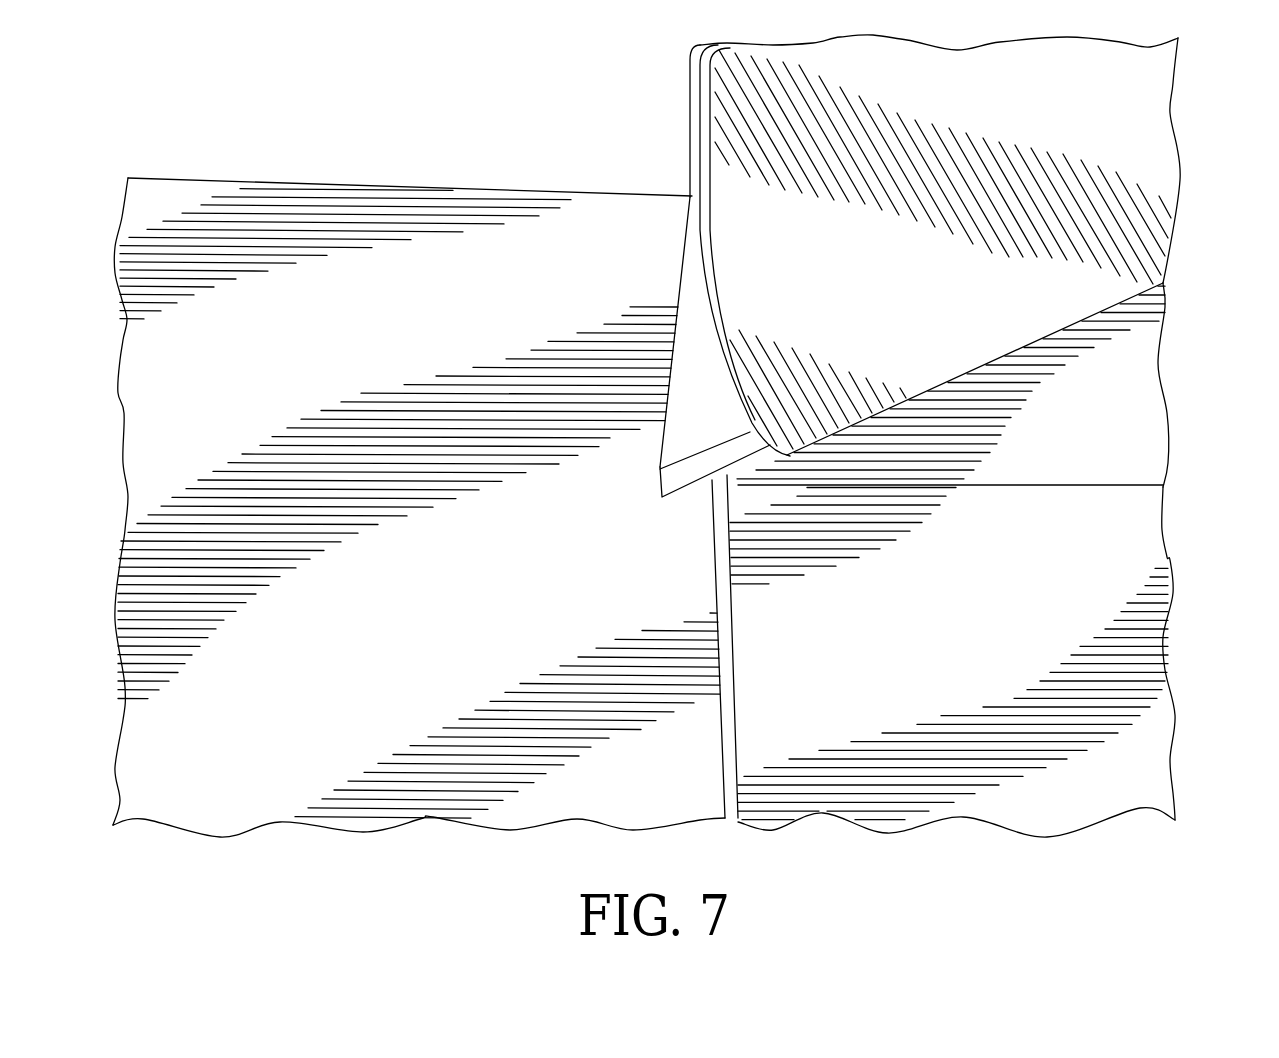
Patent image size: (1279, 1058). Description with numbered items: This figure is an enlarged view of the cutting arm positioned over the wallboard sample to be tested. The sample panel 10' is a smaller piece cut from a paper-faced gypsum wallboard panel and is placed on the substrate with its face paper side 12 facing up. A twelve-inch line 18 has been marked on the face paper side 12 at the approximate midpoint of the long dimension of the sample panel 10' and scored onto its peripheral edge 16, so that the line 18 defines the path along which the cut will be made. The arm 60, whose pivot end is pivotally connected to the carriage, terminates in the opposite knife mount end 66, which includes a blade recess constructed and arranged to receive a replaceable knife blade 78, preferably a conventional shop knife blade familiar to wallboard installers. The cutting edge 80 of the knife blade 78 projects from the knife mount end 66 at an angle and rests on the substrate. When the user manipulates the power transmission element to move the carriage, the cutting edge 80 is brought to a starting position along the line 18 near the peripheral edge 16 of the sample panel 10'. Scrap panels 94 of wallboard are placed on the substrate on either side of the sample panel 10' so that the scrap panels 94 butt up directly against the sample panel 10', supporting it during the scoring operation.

The arm 60 is at (1147, 84).
The knife mount end 66 is at (837, 307).
The knife blade 78 is at (693, 331).
The cutting edge 80 is at (683, 476).
The line 18 is at (1017, 485).
The face paper side 12 is at (1133, 537).
The scrap panels 94 is at (420, 617).
The sample panel 10' is at (956, 560).
The peripheral edge 16 is at (730, 797).